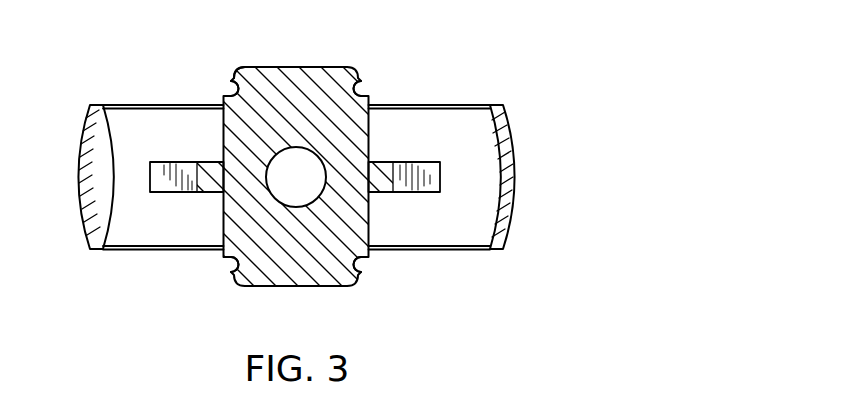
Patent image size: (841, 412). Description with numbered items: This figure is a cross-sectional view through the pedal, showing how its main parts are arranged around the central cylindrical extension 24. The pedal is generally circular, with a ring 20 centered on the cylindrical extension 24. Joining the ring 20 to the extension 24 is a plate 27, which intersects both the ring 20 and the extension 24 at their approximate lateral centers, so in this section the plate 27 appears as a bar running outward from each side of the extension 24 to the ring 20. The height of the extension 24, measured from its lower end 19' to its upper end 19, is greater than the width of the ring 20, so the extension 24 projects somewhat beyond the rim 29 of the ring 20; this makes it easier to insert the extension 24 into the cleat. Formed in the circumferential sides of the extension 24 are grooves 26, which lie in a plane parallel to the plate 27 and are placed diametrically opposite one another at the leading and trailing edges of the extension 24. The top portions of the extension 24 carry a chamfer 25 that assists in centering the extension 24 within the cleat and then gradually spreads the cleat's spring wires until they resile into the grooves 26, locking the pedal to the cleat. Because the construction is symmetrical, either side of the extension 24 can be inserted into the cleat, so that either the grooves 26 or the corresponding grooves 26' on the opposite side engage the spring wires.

The top end of extension 19 is at (296, 44).
The bottom end of extension 19' is at (266, 305).
The ring 20 is at (512, 186).
The cylindrical extension 24 is at (311, 92).
The chamfer 25 is at (233, 75).
The grooves 26 is at (292, 69).
The grooves 26' is at (294, 273).
The plate 27 is at (382, 180).
The rim 29 is at (97, 104).